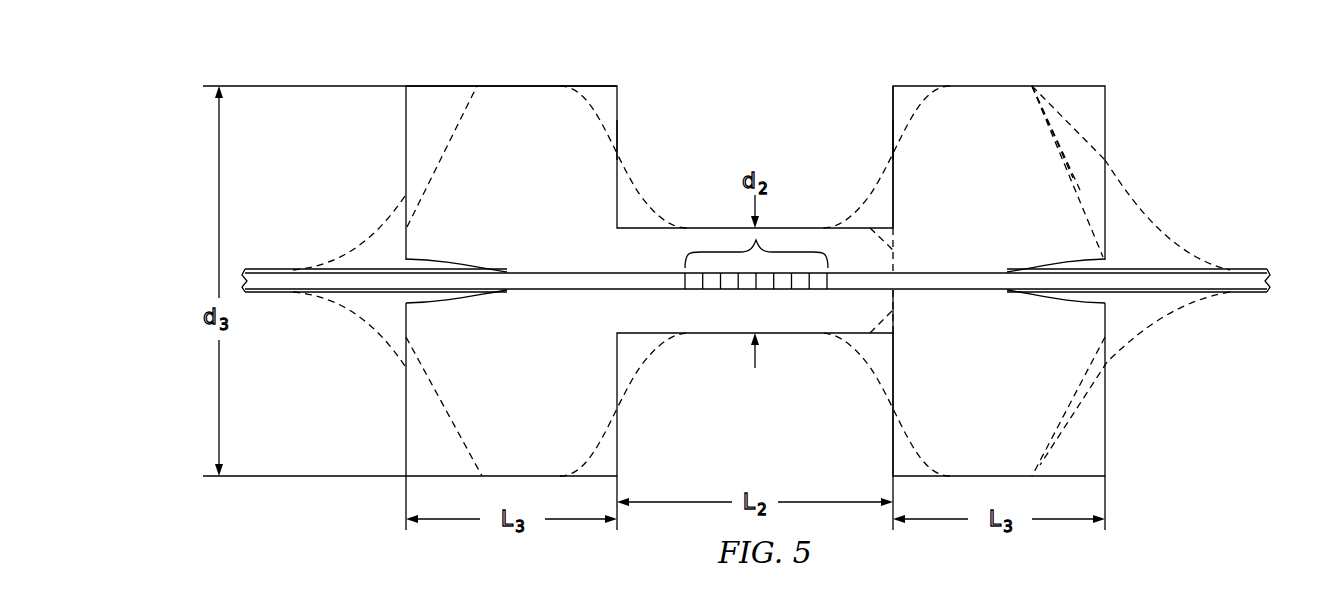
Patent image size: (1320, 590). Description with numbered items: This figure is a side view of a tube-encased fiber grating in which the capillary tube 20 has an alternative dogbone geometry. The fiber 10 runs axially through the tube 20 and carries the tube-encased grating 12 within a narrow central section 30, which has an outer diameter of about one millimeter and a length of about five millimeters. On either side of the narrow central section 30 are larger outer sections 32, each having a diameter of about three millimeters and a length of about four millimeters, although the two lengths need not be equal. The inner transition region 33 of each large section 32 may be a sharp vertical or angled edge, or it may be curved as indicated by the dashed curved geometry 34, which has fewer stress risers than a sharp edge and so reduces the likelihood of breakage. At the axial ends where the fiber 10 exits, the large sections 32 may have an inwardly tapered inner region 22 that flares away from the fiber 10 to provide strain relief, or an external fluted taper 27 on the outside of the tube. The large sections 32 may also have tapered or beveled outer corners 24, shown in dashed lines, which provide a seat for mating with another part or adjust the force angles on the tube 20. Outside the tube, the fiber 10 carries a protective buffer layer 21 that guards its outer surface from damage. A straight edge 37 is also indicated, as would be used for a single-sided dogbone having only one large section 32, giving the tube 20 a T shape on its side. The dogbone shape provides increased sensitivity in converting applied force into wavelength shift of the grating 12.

The fiber 10 is at (553, 272).
The tube-encased grating 12 is at (757, 241).
The capillary tube 20 is at (504, 80).
The buffer layer 21 is at (262, 269).
The inner tapered region 22 is at (445, 259).
The beveled outer corners 24 is at (438, 163).
The external taper 27 is at (382, 222).
The narrow central section 30 is at (703, 240).
The large sections 32 is at (551, 146).
The inner transition region 33 is at (617, 139).
The curved geometry 34 is at (598, 132).
The straight edge 37 is at (895, 304).